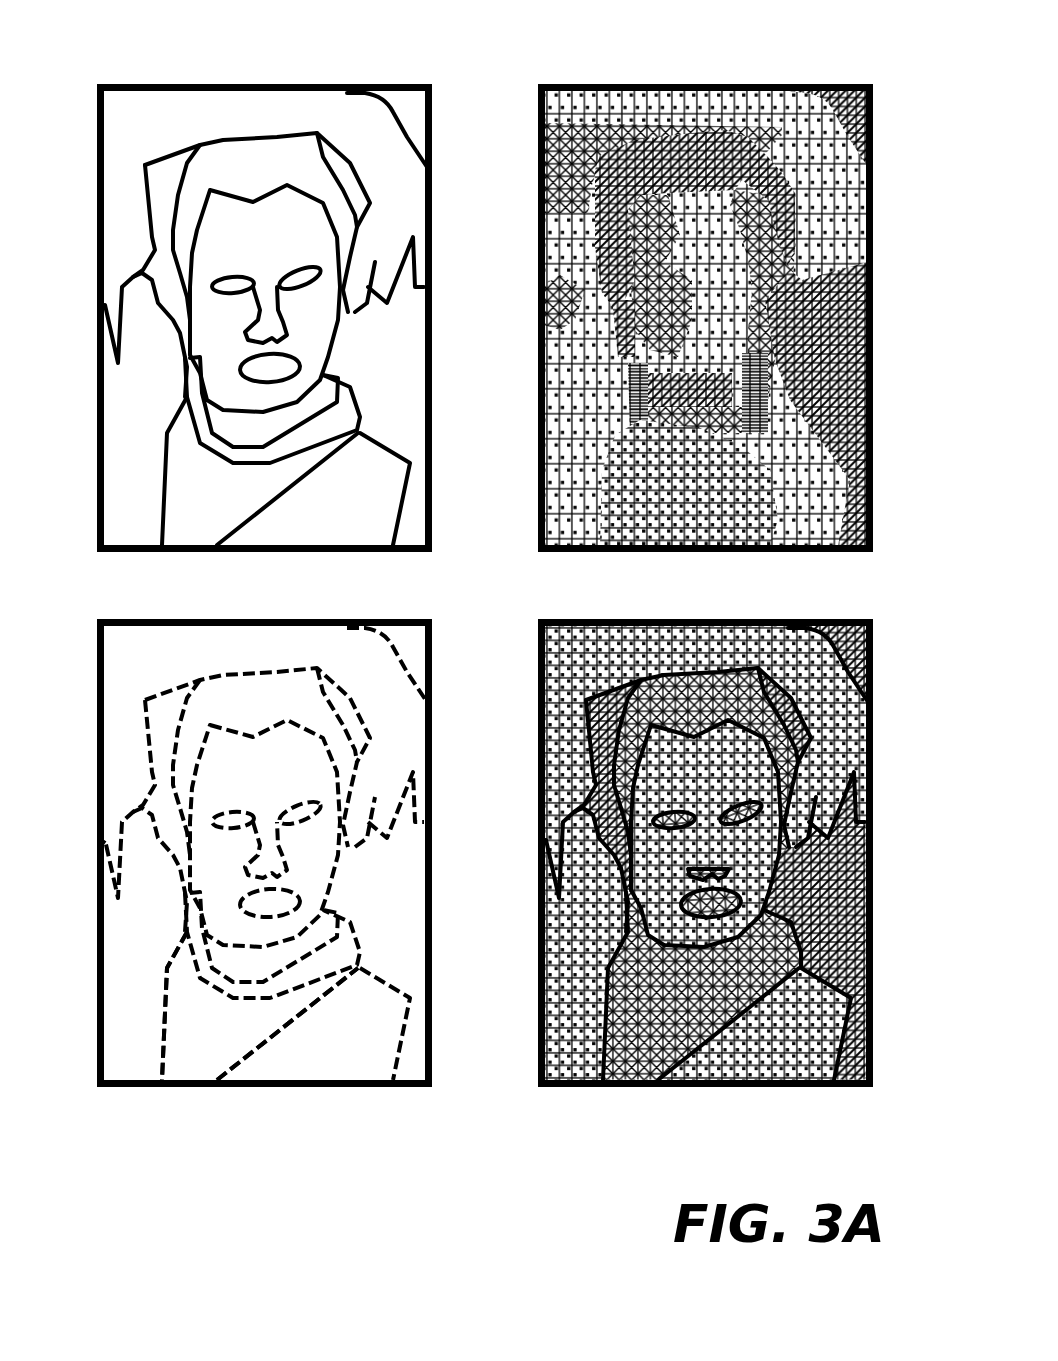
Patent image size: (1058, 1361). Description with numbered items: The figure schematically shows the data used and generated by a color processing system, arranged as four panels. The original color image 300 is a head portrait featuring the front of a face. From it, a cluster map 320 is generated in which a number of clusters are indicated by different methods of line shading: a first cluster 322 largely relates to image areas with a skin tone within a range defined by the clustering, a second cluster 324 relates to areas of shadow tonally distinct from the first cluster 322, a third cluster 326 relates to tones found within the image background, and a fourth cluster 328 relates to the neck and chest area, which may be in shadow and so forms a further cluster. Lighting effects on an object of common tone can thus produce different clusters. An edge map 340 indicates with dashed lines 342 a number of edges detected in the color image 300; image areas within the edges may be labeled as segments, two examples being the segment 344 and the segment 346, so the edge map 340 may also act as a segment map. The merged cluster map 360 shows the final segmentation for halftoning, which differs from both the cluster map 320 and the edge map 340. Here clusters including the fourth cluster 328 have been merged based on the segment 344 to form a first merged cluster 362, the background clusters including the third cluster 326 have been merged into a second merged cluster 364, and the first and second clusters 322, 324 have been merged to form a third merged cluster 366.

The original color image 300 is at (106, 35).
The cluster map 320 is at (702, 303).
The first cluster 322 is at (775, 112).
The second cluster 324 is at (563, 168).
The third cluster 326 is at (838, 372).
The fourth cluster 328 is at (653, 497).
The edge map 340 is at (223, 908).
The dashed lines 342 is at (271, 1040).
The segment 344 is at (203, 1032).
The segment 346 is at (128, 668).
The merged cluster map 360 is at (710, 893).
The first merged cluster 362 is at (702, 908).
The second merged cluster 364 is at (755, 853).
The third merged cluster 366 is at (565, 650).